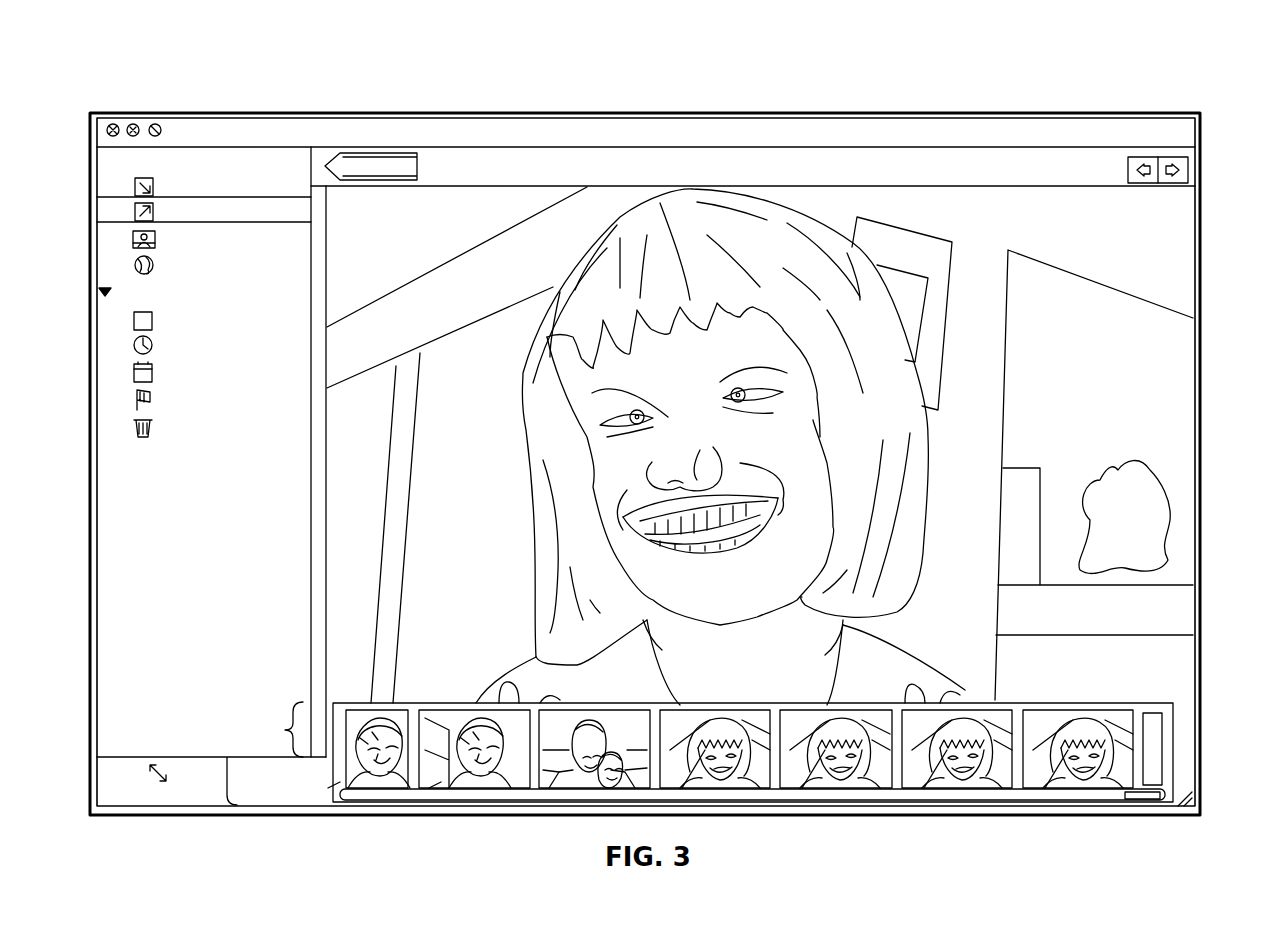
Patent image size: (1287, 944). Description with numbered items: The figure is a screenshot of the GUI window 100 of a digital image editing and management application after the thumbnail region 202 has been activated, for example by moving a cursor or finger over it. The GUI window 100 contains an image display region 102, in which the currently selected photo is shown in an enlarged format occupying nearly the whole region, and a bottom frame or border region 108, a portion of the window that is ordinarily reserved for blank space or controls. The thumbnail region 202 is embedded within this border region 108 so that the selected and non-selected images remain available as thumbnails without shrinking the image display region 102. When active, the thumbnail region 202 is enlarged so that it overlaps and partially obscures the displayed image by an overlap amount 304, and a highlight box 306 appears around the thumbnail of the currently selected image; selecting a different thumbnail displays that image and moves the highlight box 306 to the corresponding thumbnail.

The GUI window 100 is at (176, 73).
The image display region 102 is at (1208, 190).
The border region 108 is at (1208, 765).
The thumbnail region 202 is at (240, 698).
The overlap amount 304 is at (270, 729).
The highlight box 306 is at (1035, 783).